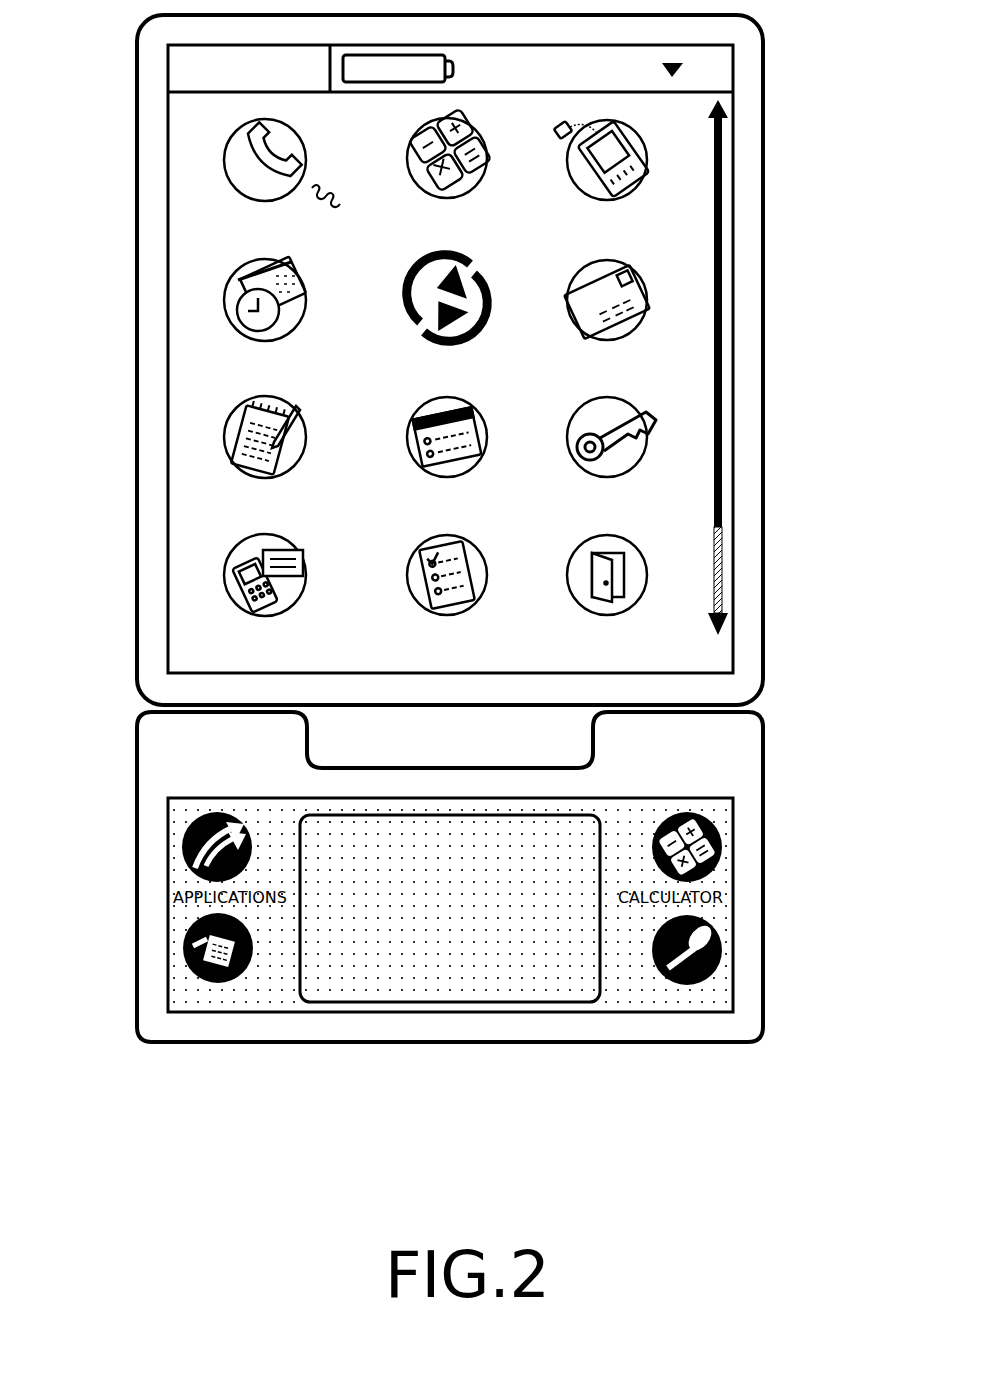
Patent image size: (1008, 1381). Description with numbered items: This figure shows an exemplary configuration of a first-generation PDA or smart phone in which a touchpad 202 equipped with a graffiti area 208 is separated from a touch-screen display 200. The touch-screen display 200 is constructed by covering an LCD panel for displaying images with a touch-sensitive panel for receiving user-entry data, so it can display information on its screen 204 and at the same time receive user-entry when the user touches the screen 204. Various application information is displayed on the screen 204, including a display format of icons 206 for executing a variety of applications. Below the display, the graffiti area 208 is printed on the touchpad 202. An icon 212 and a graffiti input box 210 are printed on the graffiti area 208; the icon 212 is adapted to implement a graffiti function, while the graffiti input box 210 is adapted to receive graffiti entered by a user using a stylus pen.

The touch-screen display 200 is at (740, 178).
The touchpad 202 is at (158, 873).
The screen 204 is at (456, 359).
The icon 206 is at (225, 302).
The graffiti area 208 is at (720, 915).
The graffiti input box 210 is at (602, 982).
The icon 212 is at (182, 958).